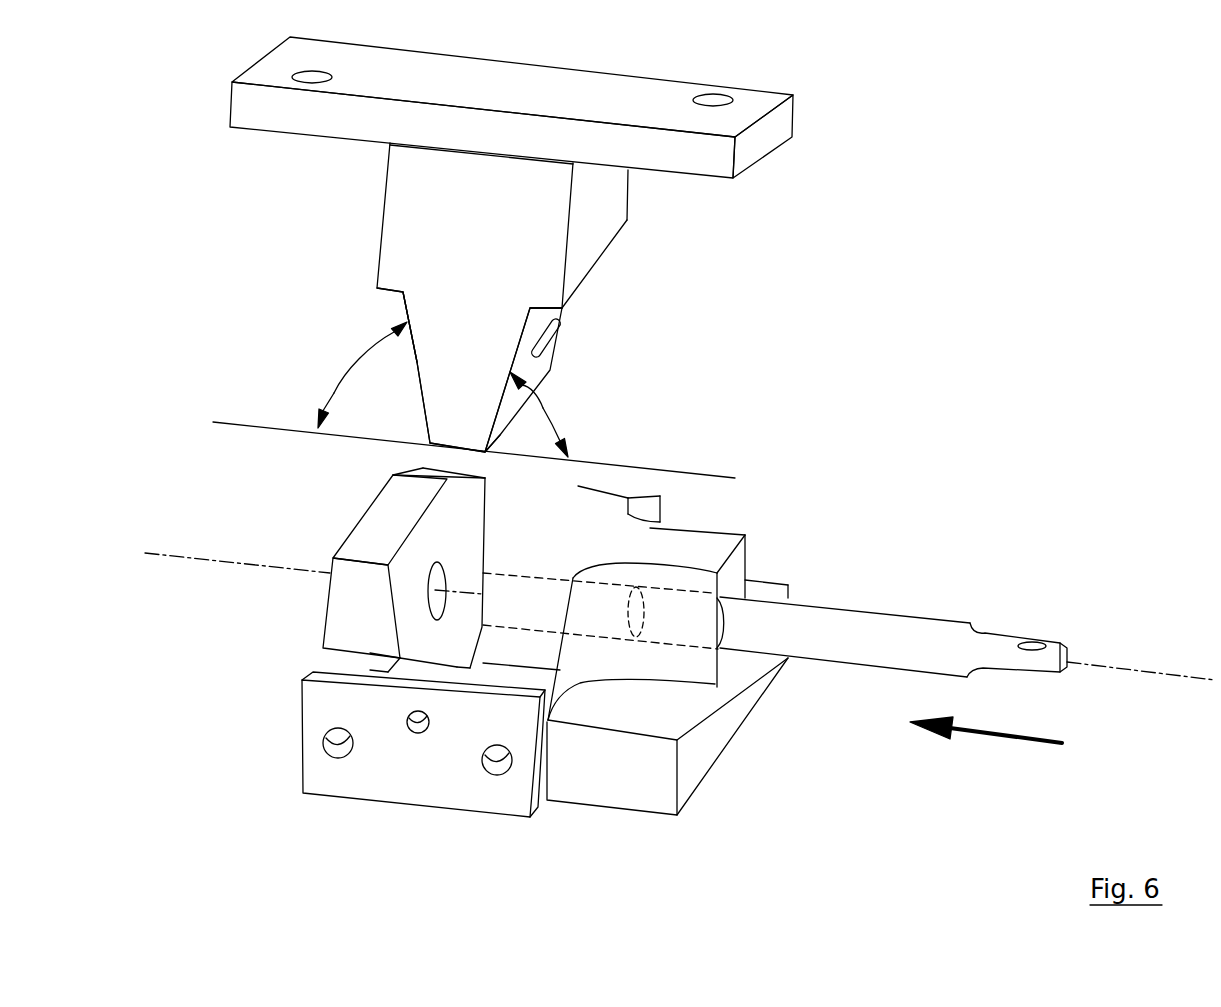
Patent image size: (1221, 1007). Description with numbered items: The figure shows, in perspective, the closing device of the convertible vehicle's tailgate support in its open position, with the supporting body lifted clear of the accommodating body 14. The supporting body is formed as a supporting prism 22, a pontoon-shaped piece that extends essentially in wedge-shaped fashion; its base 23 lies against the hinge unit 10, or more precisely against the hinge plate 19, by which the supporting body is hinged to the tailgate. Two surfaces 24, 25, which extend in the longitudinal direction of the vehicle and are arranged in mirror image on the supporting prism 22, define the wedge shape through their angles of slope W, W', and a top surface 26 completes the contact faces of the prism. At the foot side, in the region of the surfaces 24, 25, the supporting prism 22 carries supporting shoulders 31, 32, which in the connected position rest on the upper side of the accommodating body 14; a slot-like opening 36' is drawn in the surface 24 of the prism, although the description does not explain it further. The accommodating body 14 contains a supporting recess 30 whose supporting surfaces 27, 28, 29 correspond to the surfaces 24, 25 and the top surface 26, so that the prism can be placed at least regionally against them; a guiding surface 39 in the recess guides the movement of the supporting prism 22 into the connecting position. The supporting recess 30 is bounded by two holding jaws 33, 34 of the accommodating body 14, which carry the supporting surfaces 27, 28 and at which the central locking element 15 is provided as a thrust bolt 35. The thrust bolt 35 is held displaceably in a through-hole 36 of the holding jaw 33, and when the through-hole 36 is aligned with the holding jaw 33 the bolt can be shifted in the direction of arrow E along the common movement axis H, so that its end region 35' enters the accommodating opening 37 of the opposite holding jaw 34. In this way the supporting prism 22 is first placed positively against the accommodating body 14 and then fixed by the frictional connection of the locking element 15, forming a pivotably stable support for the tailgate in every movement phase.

The hinge unit 10 is at (822, 115).
The hinge plate 19 is at (267, 104).
The base 23 is at (501, 155).
The supporting prism 22 is at (470, 226).
The supporting shoulder 31 is at (539, 308).
The surface 24 is at (557, 322).
The supporting shoulder 32 is at (403, 292).
The surface 25 is at (416, 363).
The punch slot 36' is at (653, 340).
The top surface 26 is at (500, 435).
The angle of slope W' is at (286, 375).
The angle of slope W is at (637, 414).
The guiding surface 39 is at (497, 523).
The supporting surface 27 is at (485, 478).
The accommodating body 14 is at (302, 597).
The supporting surface 28 is at (437, 527).
The holding jaw 34 is at (388, 535).
The accommodating opening 37 is at (442, 597).
The movement axis H is at (170, 555).
The supporting recess 30 is at (405, 664).
The supporting surface 29 is at (457, 668).
The holding jaw 33 is at (683, 553).
The through-hole 36 is at (623, 729).
The end region 35' is at (646, 698).
The locking element 15 is at (946, 599).
The thrust bolt 35 is at (958, 697).
The arrow E is at (1007, 735).